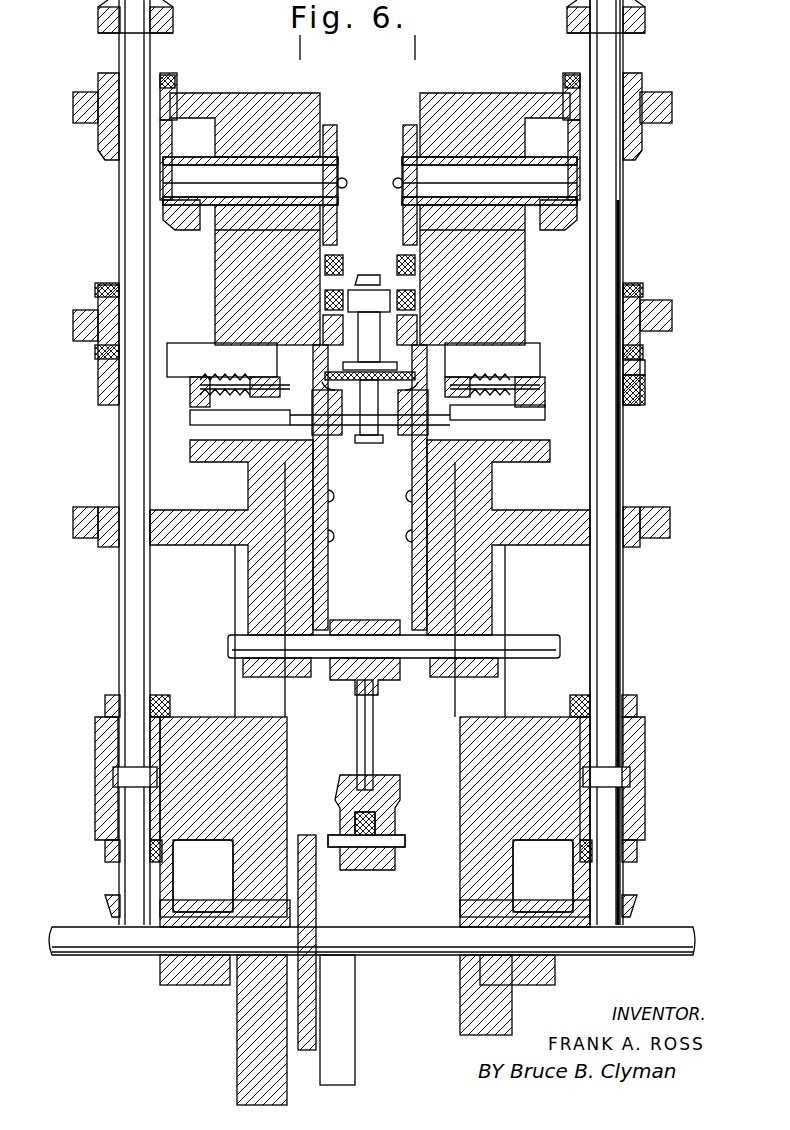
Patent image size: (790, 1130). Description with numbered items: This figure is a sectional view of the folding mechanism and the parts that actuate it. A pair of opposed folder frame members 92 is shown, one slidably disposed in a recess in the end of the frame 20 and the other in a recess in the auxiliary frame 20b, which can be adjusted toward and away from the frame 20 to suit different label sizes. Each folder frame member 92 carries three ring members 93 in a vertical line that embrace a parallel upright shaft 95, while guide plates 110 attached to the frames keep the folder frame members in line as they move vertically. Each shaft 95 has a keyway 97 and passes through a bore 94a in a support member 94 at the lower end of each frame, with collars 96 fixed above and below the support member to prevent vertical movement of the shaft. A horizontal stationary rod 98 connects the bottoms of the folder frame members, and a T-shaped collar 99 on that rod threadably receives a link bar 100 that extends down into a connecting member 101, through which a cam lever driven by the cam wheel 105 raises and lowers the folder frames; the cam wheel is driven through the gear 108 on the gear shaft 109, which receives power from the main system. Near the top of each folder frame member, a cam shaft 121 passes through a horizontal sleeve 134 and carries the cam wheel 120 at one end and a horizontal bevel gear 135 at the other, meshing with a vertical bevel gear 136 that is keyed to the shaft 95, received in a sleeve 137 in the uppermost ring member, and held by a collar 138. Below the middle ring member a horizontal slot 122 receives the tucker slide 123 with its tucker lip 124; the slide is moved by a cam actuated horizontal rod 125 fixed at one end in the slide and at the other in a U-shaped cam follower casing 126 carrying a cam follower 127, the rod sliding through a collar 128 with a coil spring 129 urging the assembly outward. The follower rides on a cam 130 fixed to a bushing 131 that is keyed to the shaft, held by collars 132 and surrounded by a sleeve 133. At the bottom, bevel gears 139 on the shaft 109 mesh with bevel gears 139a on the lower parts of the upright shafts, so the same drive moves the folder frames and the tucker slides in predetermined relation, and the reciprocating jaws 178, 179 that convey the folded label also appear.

The frame 20 is at (248, 588).
The auxiliary frame 20b is at (495, 592).
The folder frame member 92 is at (225, 268).
The ring member 93 is at (72, 105).
The support member 94 is at (207, 838).
The bore 94a is at (162, 720).
The upright shaft 95 is at (122, 602).
The collar 96 is at (105, 705).
The keyway 97 is at (600, 483).
The horizontal stationary rod 98 is at (415, 660).
The T-shaped collar 99 is at (368, 622).
The link bar 100 is at (358, 748).
The connecting member 101 is at (395, 795).
The cam wheel 105 is at (355, 1062).
The gear 108 is at (318, 1020).
The gear shaft 109 is at (110, 945).
The guide plate 110 is at (412, 522).
The cam wheel 120 is at (330, 125).
The cam shaft 121 is at (305, 175).
The horizontal slot 122 is at (275, 380).
The tucker slide 123 is at (325, 432).
The tucker lip 124 is at (388, 390).
The cam actuated horizontal rod 125 is at (210, 425).
The U-shaped cam follower casing 126 is at (195, 410).
The cam follower 127 is at (195, 378).
The collar 128 is at (490, 378).
The coil spring 129 is at (530, 375).
The cam 130 is at (576, 407).
The bushing 131 is at (645, 388).
The collar 132 is at (95, 288).
The sleeve 133 is at (646, 368).
The horizontal sleeve 134 is at (265, 157).
The bevel gear 135 is at (180, 225).
The bevel gear 136 is at (100, 156).
The sleeve 137 is at (100, 88).
The collar 138 is at (170, 73).
The bevel gear 139 is at (175, 985).
The bevel gear 139a is at (666, 893).
The reciprocating jaw 178 is at (372, 330).
The reciprocating jaw 179 is at (368, 440).